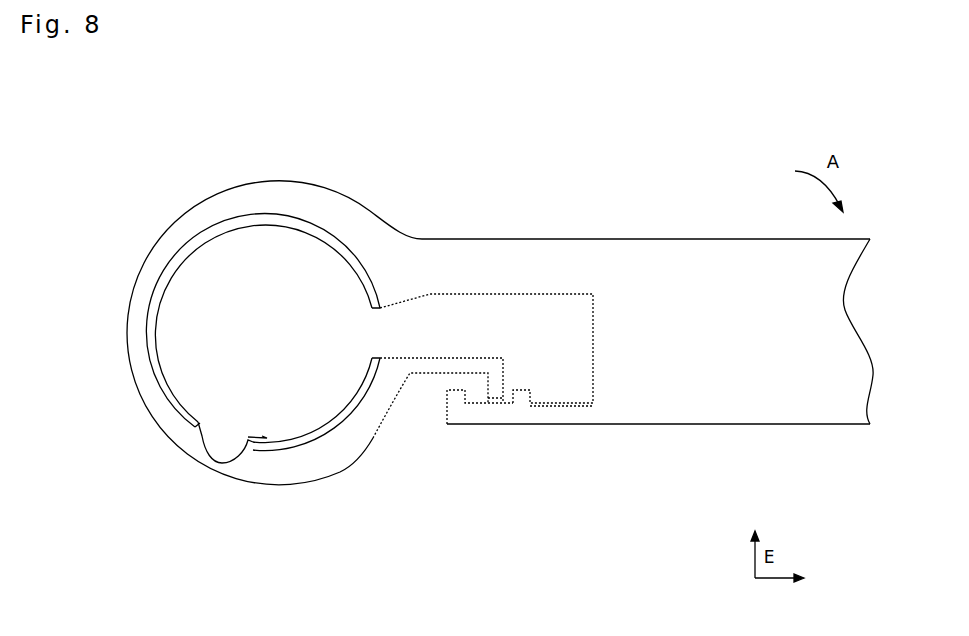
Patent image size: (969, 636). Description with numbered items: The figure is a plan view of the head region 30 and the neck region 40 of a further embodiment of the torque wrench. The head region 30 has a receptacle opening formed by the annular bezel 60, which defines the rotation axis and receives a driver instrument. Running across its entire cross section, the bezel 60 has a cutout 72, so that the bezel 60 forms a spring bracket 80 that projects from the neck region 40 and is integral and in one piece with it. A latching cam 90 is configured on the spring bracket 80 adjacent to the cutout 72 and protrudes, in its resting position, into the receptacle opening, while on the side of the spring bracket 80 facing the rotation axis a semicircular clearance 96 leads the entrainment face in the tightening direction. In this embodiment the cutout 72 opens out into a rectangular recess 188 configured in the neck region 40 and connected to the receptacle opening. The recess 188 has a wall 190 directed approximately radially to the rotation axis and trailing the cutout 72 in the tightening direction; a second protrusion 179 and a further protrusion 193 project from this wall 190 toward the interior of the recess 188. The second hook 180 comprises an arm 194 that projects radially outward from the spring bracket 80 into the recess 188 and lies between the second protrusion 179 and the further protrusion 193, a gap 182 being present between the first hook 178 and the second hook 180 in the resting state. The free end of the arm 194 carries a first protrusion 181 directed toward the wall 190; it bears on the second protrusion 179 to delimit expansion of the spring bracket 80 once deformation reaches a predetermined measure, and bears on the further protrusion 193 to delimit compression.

The head region 30 is at (365, 184).
The neck region 40 is at (664, 213).
The annular bezel 60 is at (225, 354).
The spring bracket 80 is at (160, 428).
The cutout 72 is at (289, 294).
The gap 182 is at (375, 330).
The latching cam 90 is at (255, 441).
The semicircular clearance 96 is at (218, 453).
The first hook 178 is at (543, 440).
The second protrusion 179 is at (455, 400).
The second hook 180 is at (428, 378).
The first protrusion 181 is at (495, 390).
The rectangular recess 188 is at (532, 313).
The wall 190 is at (518, 415).
The further protrusion 193 is at (522, 398).
The arm 194 is at (457, 362).